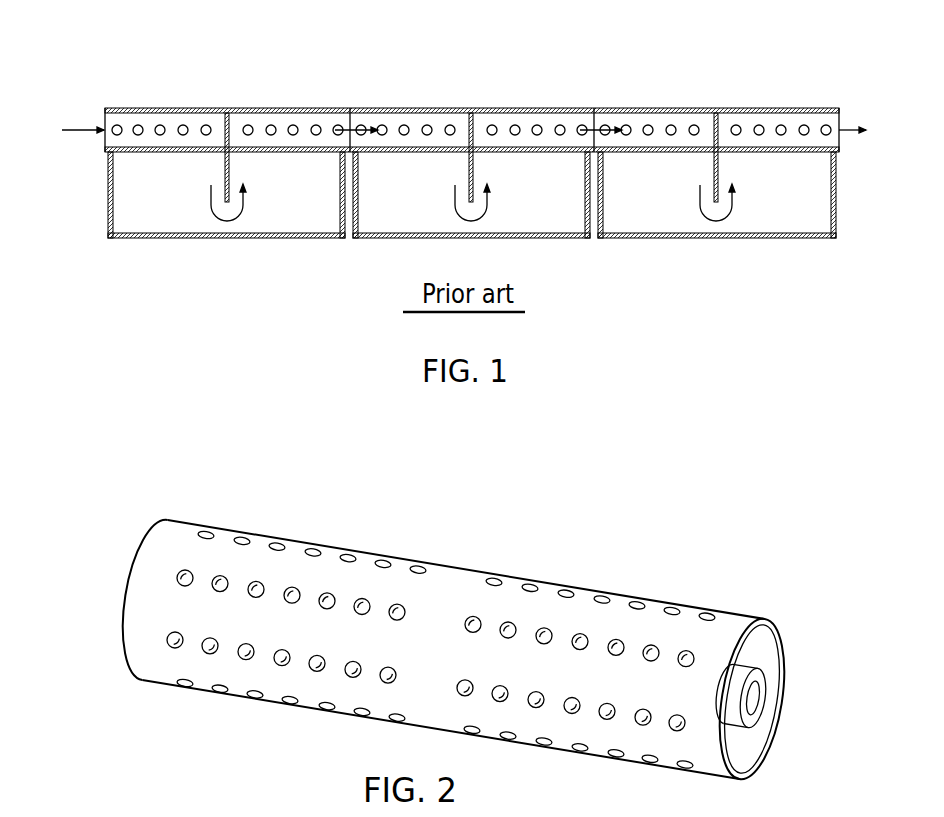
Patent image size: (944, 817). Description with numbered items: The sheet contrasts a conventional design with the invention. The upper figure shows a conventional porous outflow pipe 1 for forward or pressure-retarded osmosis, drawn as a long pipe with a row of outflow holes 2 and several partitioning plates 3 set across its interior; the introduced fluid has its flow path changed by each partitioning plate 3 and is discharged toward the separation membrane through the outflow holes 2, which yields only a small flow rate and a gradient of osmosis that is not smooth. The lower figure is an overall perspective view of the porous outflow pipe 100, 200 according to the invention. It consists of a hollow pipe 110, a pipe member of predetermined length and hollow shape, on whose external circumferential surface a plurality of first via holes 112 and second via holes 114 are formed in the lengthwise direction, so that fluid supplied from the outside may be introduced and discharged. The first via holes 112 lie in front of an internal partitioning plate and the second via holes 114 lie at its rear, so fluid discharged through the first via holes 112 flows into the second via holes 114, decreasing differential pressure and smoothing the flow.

In FIG. 1, the outflow pipe 1 is at (282, 100).
In FIG. 1, the outflow holes 2 is at (181, 125).
In FIG. 1, the partitioning plate 3 is at (232, 127).
In FIG. 2, the porous outflow pipe for forward osmosis or pressure-retarded osmosis 100 is at (652, 560).
In FIG. 2, the porous outflow pipe for forward osmosis or pressure-retarded osmosis 200 is at (459, 624).
In FIG. 2, the hollow pipe 110 is at (449, 608).
In FIG. 2, the first via holes 112 is at (399, 606).
In FIG. 2, the second via holes 114 is at (476, 620).